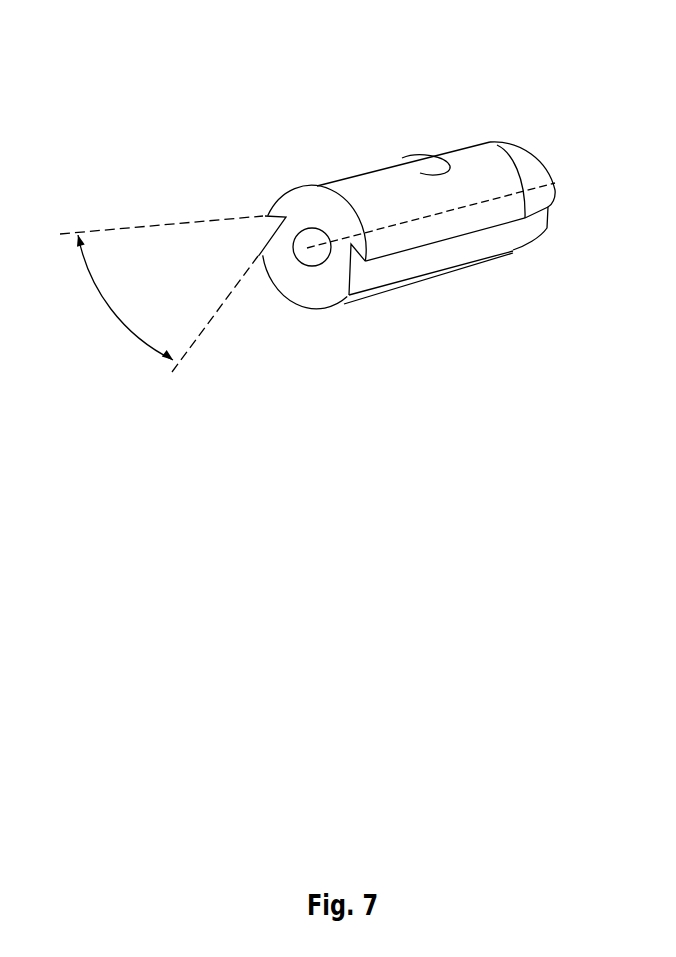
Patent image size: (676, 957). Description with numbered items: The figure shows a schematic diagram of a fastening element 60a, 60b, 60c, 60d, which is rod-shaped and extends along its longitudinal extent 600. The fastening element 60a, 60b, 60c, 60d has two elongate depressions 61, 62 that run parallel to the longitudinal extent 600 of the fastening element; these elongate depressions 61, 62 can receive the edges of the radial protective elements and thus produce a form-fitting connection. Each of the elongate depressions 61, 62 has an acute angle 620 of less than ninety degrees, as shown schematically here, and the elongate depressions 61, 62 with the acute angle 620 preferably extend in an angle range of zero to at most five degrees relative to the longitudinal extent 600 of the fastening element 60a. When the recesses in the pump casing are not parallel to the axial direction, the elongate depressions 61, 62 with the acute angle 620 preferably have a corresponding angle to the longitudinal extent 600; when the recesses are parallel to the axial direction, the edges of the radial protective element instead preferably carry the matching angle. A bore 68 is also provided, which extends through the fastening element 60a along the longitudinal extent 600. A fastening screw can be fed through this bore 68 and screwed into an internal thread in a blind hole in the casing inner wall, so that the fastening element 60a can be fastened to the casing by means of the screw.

The fastening element 60a is at (383, 165).
The fastening element 60b is at (409, 225).
The fastening element 60c is at (409, 225).
The fastening element 60d is at (382, 193).
The elongate depression 61 is at (407, 261).
The elongate depression 62 is at (253, 235).
The bore 68 is at (315, 258).
The longitudinal extent 600 is at (490, 203).
The acute angle 620 is at (158, 294).